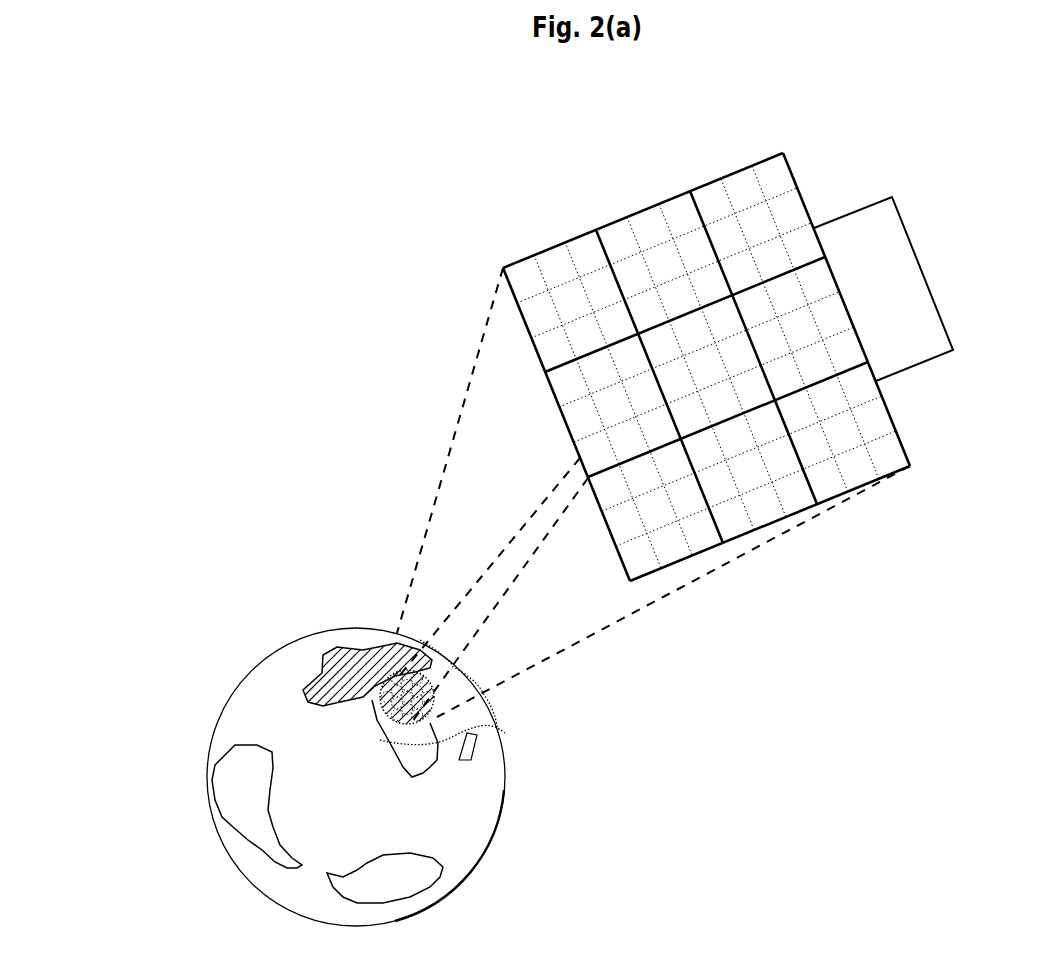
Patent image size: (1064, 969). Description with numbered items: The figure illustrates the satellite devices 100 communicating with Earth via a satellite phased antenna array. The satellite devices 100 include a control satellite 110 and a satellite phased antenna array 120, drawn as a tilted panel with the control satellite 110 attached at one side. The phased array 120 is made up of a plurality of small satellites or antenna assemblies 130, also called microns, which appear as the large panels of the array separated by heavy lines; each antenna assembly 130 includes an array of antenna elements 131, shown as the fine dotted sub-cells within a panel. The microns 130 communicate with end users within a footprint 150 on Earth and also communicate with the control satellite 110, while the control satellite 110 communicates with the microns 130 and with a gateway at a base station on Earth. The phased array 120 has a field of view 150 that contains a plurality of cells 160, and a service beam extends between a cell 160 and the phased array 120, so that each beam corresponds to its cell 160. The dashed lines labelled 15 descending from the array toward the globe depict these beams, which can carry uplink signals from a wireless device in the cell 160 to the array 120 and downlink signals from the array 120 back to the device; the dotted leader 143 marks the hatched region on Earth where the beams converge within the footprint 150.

The satellite devices 100 is at (265, 345).
The control satellite 110 is at (930, 288).
The satellite phased antenna array 120 is at (470, 258).
The antenna assembly 130 is at (725, 174).
The antenna element 131 is at (877, 413).
The beam 15 is at (530, 512).
The coverage area 143 is at (372, 680).
The footprint 150 is at (420, 757).
The cell 160 is at (423, 727).